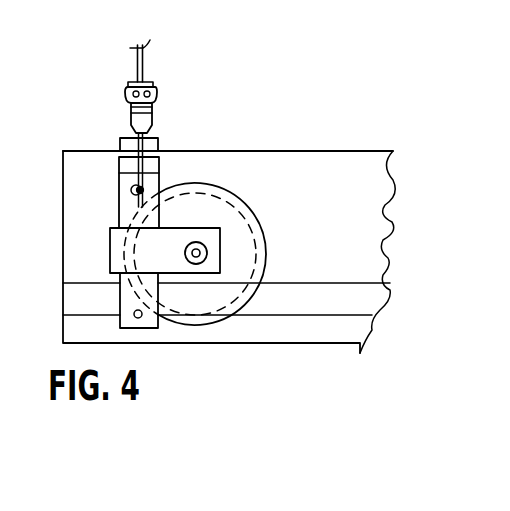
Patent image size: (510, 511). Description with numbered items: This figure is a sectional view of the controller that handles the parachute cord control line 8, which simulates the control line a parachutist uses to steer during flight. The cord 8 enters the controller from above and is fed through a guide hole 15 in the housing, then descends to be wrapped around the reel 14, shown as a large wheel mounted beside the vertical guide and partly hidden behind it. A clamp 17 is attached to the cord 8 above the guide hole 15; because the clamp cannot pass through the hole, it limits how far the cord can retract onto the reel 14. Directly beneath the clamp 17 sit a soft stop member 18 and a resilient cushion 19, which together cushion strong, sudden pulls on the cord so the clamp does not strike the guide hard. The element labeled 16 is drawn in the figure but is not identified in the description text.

The parachute cord control line 8 is at (137, 55).
The reel 14 is at (253, 205).
The guide hole 15 is at (155, 145).
The pin 16 is at (140, 208).
The clamp 17 is at (157, 92).
The soft stop member 18 is at (132, 140).
The resilient cushion 19 is at (151, 113).